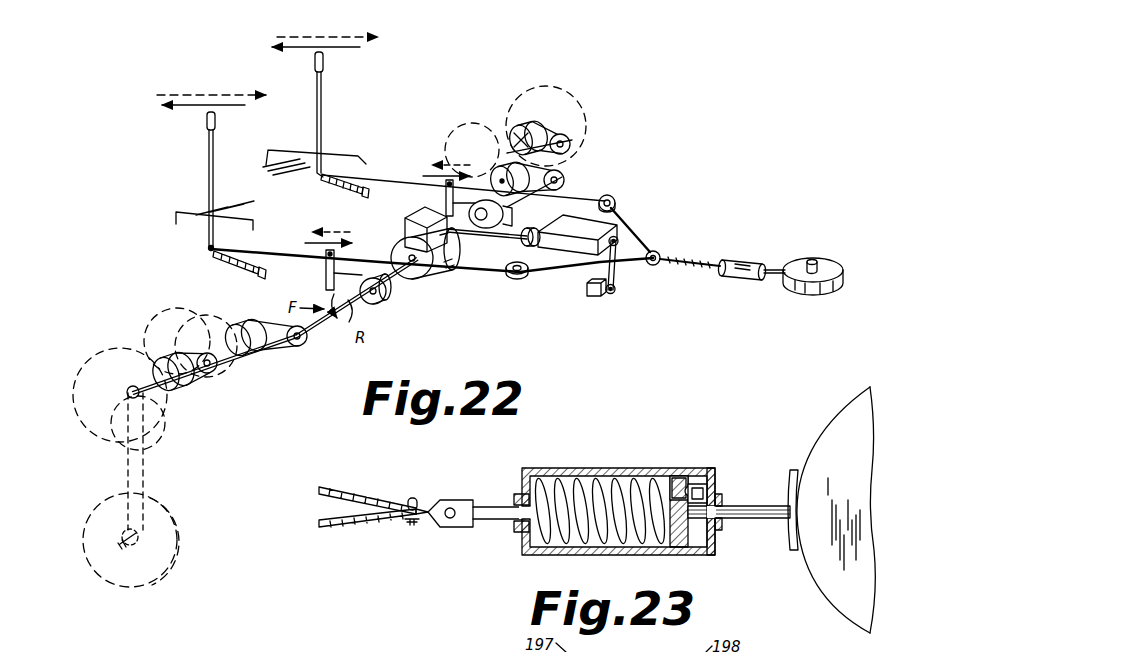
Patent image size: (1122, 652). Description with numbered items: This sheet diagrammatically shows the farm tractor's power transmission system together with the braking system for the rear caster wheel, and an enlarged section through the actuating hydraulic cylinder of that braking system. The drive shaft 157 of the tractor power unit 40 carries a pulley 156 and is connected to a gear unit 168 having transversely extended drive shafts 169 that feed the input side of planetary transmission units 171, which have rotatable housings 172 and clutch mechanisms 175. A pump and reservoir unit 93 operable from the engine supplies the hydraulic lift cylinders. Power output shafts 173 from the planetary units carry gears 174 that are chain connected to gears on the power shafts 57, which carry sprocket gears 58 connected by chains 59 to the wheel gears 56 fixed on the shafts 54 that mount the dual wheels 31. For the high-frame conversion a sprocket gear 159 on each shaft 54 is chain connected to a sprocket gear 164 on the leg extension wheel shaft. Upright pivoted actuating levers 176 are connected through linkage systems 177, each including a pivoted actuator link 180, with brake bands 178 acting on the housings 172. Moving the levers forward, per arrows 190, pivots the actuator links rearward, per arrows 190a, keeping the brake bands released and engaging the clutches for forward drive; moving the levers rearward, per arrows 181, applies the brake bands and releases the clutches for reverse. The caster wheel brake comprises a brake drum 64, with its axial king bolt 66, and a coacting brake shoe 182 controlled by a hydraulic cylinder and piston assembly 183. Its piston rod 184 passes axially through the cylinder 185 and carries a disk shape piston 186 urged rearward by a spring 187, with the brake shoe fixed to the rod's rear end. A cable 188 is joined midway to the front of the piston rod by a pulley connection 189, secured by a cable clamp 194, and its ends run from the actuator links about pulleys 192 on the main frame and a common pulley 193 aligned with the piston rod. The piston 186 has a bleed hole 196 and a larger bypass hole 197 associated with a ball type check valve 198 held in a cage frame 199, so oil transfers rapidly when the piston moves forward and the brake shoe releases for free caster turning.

In FIG. 22, the dual wheels 31 is at (110, 350).
In FIG. 22, the tractor power unit 40 is at (614, 207).
In FIG. 22, the shaft 54 is at (152, 358).
In FIG. 22, the sprocket gear 56 is at (526, 128).
In FIG. 22, the power shaft 57 is at (568, 150).
In FIG. 22, the sprocket gear 58 is at (565, 138).
In FIG. 22, the chain 59 is at (180, 338).
In FIG. 22, the brake drum 64 is at (845, 268).
In FIG. 23, the brake drum 64 is at (845, 417).
In FIG. 22, the king bolt 66 is at (813, 260).
In FIG. 22, the pump and reservoir unit 93 is at (597, 298).
In FIG. 22, the pulley 156 is at (495, 160).
In FIG. 22, the drive shaft 157 is at (517, 275).
In FIG. 22, the sprocket gear 159 is at (110, 445).
In FIG. 22, the sprocket gear 164 is at (160, 521).
In FIG. 22, the gear unit 168 is at (407, 226).
In FIG. 22, the drive shafts 169 is at (448, 262).
In FIG. 22, the planetary transmission units 171 is at (527, 203).
In FIG. 22, the rotatable housings 172 is at (490, 168).
In FIG. 22, the power output shafts 173 is at (305, 343).
In FIG. 22, the gears 174 is at (300, 350).
In FIG. 22, the clutch mechanisms 175 is at (484, 238).
In FIG. 22, the actuating levers 176 is at (324, 90).
In FIG. 22, the linkage systems 177 is at (432, 193).
In FIG. 22, the brake bands 178 is at (342, 272).
In FIG. 22, the actuator link 180 is at (326, 268).
In FIG. 22, the arrows 181 is at (337, 37).
In FIG. 23, the brake shoe 182 is at (793, 470).
In FIG. 22, the hydraulic cylinder and piston assembly 183 is at (750, 253).
In FIG. 23, the hydraulic cylinder and piston assembly 183 is at (583, 465).
In FIG. 22, the piston rod 184 is at (783, 276).
In FIG. 23, the piston rod 184 is at (744, 503).
In FIG. 23, the cylinder 185 is at (530, 553).
In FIG. 23, the piston 186 is at (717, 548).
In FIG. 23, the spring 187 is at (613, 537).
In FIG. 22, the cable 188 is at (630, 230).
In FIG. 23, the cable 188 is at (347, 498).
In FIG. 22, the pulley connection 189 is at (690, 270).
In FIG. 23, the pulley connection 189 is at (452, 499).
In FIG. 22, the arrows 190 is at (278, 45).
In FIG. 22, the arrows 190a is at (433, 164).
In FIG. 22, the pulleys 192 is at (613, 198).
In FIG. 22, the common pulley 193 is at (661, 253).
In FIG. 23, the cable clamp 194 is at (412, 528).
In FIG. 23, the bleed hole 196 is at (667, 543).
In FIG. 23, the bypass hole 197 is at (683, 483).
In FIG. 23, the ball type check valve 198 is at (688, 488).
In FIG. 23, the cage frame 199 is at (715, 470).